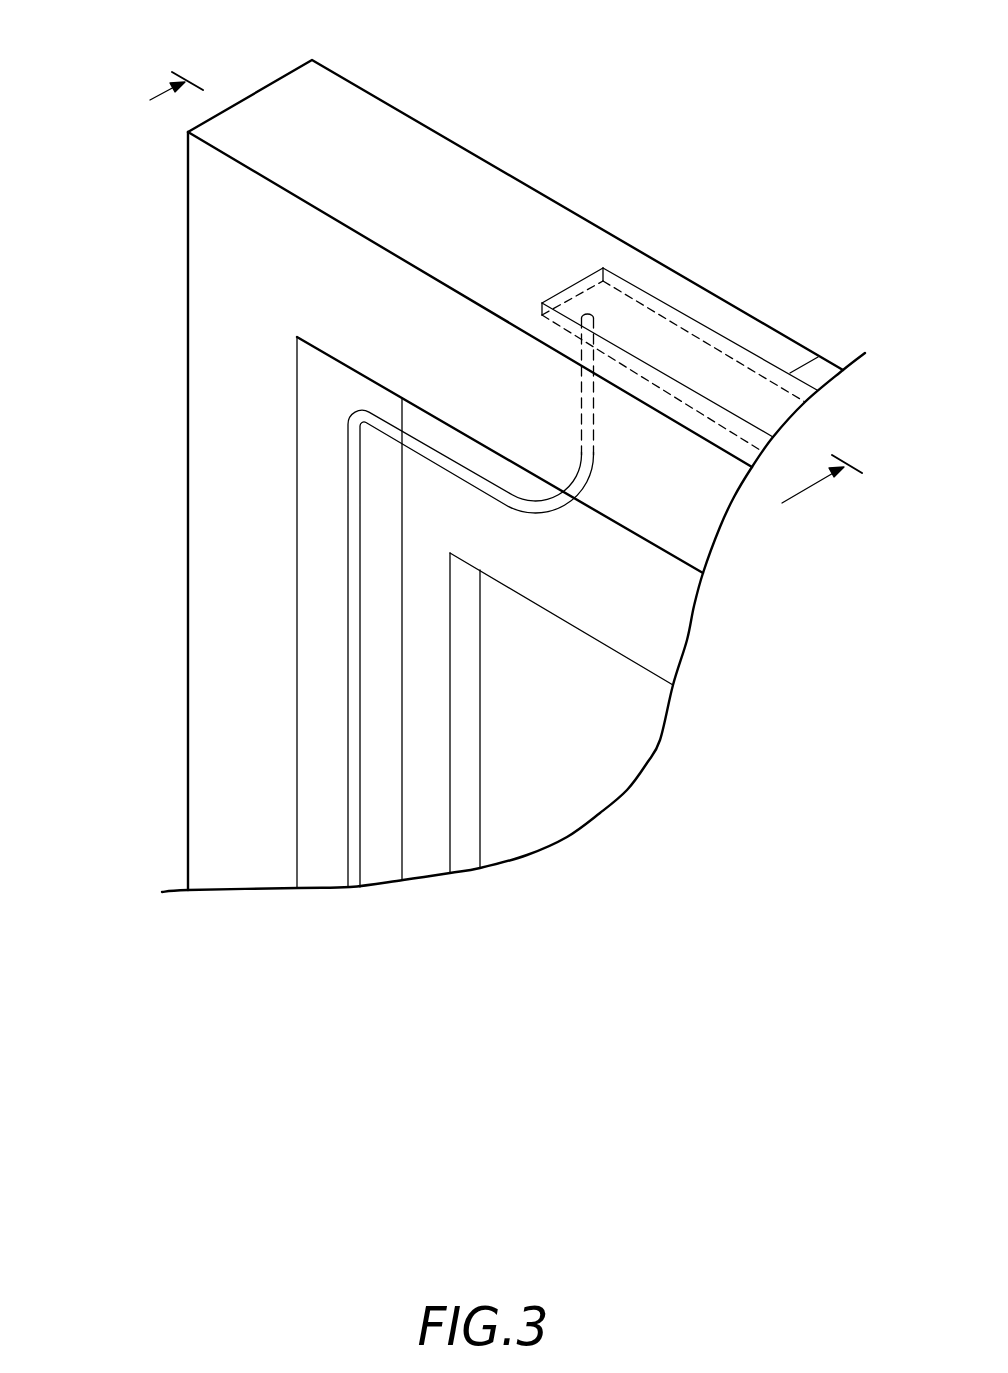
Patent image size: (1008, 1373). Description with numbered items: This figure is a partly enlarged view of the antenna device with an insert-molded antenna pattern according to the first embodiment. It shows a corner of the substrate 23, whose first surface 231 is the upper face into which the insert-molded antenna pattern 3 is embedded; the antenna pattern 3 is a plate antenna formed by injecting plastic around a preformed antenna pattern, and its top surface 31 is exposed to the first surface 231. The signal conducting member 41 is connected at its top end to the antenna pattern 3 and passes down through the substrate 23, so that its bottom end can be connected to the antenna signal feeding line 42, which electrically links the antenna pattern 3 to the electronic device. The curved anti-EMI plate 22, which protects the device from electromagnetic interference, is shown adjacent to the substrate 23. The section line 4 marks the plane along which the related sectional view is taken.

The first surface 231 is at (392, 130).
The substrate 23 is at (194, 333).
The anti-EMI plate 22 is at (633, 752).
The insert-molded antenna pattern 3 is at (723, 345).
The top surface 31 is at (813, 360).
The signal conducting member 41 is at (613, 290).
The antenna signal feeding line 42 is at (348, 455).
The section line 4- 4 is at (481, 302).